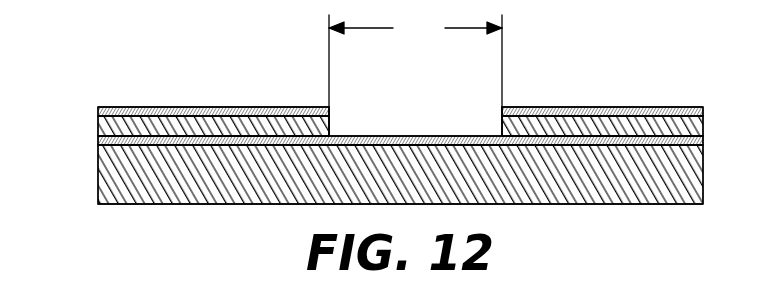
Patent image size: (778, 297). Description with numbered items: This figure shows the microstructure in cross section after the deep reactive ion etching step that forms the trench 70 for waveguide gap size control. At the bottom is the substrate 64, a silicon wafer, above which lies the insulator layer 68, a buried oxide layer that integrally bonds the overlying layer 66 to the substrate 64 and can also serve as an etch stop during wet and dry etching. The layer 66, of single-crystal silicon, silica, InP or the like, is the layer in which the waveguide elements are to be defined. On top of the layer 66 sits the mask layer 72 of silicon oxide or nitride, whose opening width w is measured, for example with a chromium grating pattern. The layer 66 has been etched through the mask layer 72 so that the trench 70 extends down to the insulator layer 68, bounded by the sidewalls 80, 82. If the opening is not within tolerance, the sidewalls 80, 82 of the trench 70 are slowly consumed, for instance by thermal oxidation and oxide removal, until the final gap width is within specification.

The substrate 64 is at (98, 182).
The layer 66 is at (98, 128).
The insulator layer 68 is at (98, 140).
The mask layer 72 is at (98, 113).
The trench 70 is at (422, 123).
The sidewall 80 is at (329, 118).
The sidewall 82 is at (502, 118).